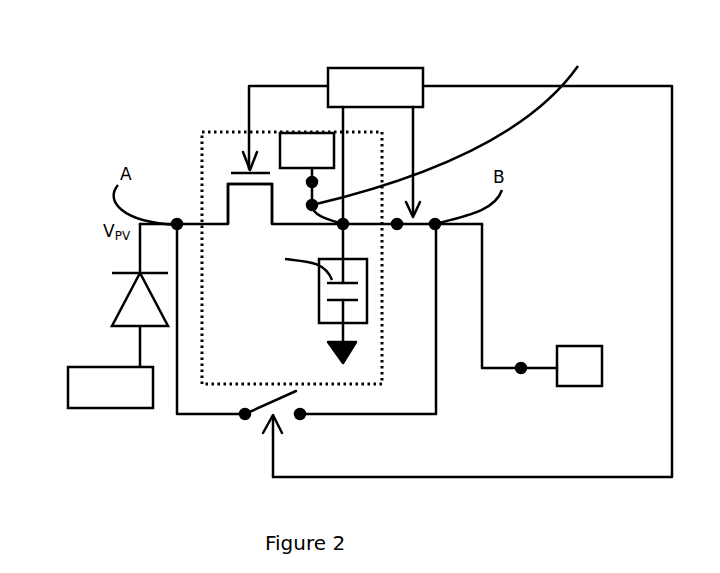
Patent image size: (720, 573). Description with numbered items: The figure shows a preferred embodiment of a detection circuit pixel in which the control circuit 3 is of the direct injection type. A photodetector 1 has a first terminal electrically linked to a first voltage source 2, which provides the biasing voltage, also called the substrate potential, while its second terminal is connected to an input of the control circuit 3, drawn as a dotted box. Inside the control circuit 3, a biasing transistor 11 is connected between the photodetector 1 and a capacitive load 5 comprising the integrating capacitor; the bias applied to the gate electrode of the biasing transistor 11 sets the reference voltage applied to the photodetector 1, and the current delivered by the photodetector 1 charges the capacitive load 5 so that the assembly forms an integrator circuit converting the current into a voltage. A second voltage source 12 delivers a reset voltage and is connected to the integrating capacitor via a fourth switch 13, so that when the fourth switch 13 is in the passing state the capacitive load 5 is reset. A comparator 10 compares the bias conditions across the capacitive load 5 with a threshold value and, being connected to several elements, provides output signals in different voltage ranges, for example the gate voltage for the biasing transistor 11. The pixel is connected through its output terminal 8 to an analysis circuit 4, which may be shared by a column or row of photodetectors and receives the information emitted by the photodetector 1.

The photodetector 1 is at (110, 318).
The first voltage source 2 is at (68, 387).
The control circuit 3 is at (222, 132).
The analysis circuit 4 is at (602, 376).
The capacitive load 5 is at (320, 312).
The output terminal 8 is at (521, 368).
The comparator 10 is at (328, 68).
The biasing transistor 11 is at (228, 190).
The second voltage source 12 is at (290, 133).
The fourth switch 13 is at (452, 122).